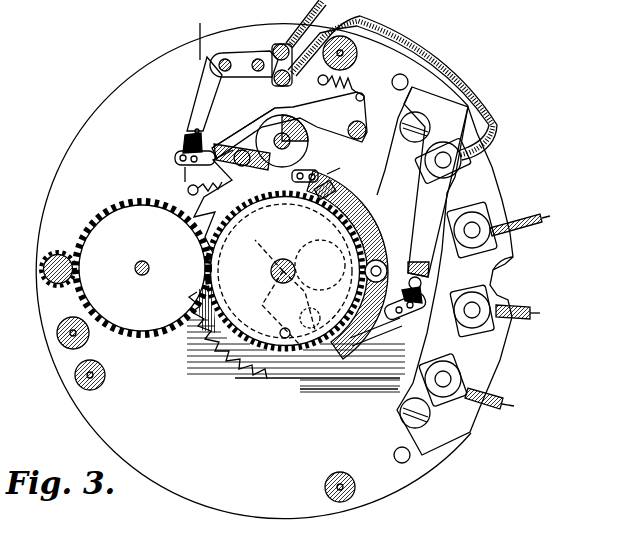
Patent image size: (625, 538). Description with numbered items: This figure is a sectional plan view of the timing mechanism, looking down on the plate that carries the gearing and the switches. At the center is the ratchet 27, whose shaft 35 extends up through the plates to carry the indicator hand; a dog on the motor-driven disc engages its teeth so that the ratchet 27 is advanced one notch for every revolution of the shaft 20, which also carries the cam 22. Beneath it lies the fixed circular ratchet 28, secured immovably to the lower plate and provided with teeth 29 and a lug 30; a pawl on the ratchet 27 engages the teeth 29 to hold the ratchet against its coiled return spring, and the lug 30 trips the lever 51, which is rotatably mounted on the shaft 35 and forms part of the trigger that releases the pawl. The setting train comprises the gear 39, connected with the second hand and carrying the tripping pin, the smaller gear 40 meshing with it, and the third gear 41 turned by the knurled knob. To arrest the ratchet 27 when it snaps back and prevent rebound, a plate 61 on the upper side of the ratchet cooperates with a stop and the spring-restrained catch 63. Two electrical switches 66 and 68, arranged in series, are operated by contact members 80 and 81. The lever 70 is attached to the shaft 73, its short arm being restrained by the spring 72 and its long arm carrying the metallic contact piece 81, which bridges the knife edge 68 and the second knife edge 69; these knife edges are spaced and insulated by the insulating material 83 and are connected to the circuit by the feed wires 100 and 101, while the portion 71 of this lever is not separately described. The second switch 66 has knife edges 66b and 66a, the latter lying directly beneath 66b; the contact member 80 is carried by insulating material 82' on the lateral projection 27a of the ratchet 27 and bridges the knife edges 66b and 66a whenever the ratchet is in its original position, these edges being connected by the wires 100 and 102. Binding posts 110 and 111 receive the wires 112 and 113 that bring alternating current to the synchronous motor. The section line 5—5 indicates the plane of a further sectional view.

The section line 5- 5 is at (198, 23).
The knife edge 68 is at (208, 56).
The feed wire 101 is at (308, 10).
The feed wire 100 is at (390, 24).
The insulating material 83 is at (237, 60).
The spring 72 is at (356, 92).
The lever arm 71 is at (295, 108).
The lever 70 is at (325, 122).
The shaft 73 is at (367, 130).
The shaft 20 is at (292, 143).
The cam 22 is at (303, 170).
The plate 61 is at (328, 173).
The spring-restrained catch 63 is at (343, 180).
The second knife edge 69 is at (196, 128).
The contact piece 81 is at (186, 139).
The gear 39 is at (234, 224).
The lever 51 is at (279, 254).
The shaft 35 is at (293, 263).
The lug 30 is at (260, 262).
The insulating material 82' is at (422, 183).
The electrical switch 66 is at (453, 192).
The knife edge 66a is at (440, 212).
The conducting wire 102 is at (538, 224).
The knife edge 66b is at (490, 268).
The contact member 80 is at (422, 283).
The binding post 110 is at (487, 300).
The wire 112 is at (512, 322).
The binding post 111 is at (452, 384).
The wire 113 is at (504, 401).
The lateral projection 27a is at (399, 316).
The teeth 29 is at (344, 341).
The ratchet 27 is at (240, 372).
The circular ratchet 28 is at (313, 384).
The gear 40 is at (142, 268).
The gear 41 is at (56, 284).